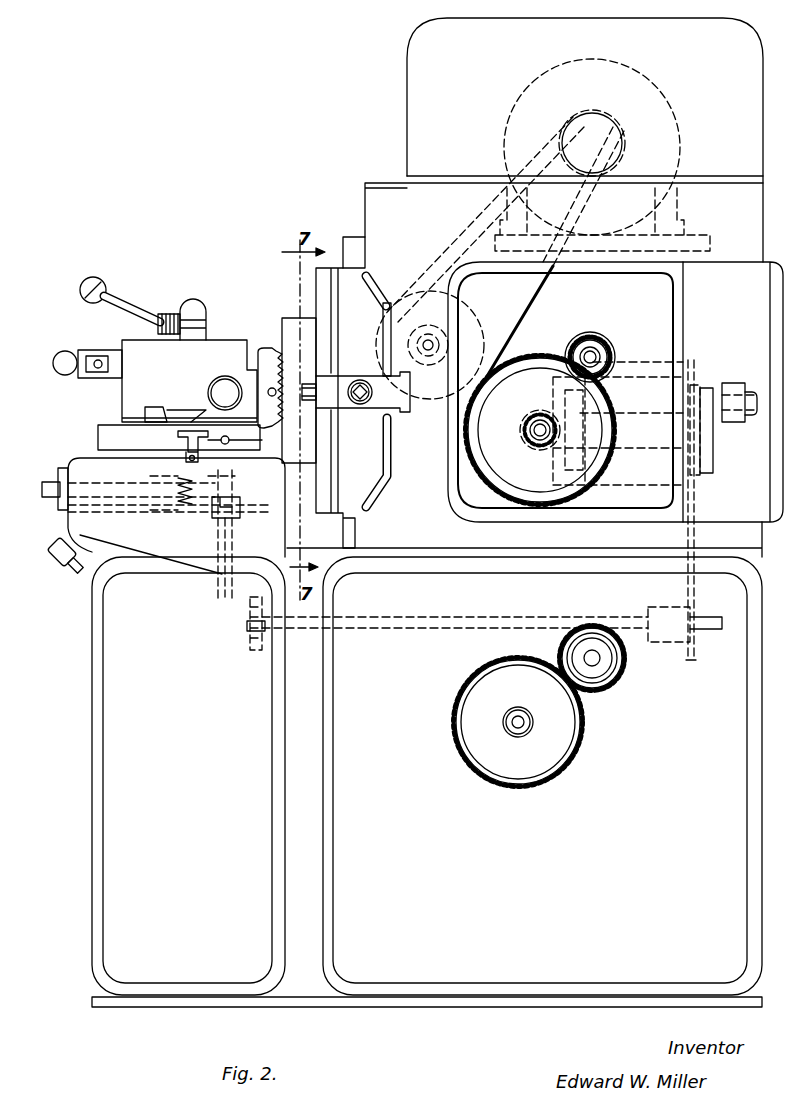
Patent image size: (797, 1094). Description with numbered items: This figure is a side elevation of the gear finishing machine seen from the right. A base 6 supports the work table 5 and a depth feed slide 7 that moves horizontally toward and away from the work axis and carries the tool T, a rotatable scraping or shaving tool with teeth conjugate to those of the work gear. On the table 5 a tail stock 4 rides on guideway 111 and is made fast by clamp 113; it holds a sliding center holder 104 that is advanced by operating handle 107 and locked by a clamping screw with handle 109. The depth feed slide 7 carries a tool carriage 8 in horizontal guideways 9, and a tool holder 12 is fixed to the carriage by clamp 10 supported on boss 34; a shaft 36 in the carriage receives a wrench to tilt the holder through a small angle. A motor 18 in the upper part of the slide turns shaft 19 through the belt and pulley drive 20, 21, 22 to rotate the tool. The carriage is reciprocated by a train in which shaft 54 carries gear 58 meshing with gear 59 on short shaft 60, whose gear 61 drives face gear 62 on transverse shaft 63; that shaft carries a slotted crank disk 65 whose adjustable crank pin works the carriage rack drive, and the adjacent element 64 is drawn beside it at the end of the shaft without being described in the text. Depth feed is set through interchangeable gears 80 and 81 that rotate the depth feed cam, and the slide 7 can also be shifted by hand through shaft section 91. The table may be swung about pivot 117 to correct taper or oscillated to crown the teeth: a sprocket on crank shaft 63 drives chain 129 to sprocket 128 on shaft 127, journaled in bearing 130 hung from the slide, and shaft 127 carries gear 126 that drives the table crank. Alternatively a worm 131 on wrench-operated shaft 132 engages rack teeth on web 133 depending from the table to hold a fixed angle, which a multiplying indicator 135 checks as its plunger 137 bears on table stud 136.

The tail stock 4 is at (221, 348).
The table 5 is at (98, 436).
The base 6 is at (92, 714).
The depth feed slide 7 is at (437, 540).
The tool carriage 8 is at (372, 298).
The horizontal guideways 9 is at (350, 238).
The clamp 10 is at (309, 402).
The tool holder 12 is at (292, 318).
The motor 18 is at (665, 118).
The shaft 19 is at (428, 362).
The pulley 20 is at (596, 122).
The belt 21 is at (509, 323).
The pulley 22 is at (470, 336).
The boss 34 is at (340, 380).
The shaft 36 is at (360, 405).
The shaft 54 is at (593, 343).
The gear 58 is at (608, 345).
The gear 59 is at (553, 355).
The short shaft 60 is at (528, 431).
The gear 61 is at (539, 418).
The face gear 62 is at (549, 455).
The transverse shaft 63 is at (645, 424).
The flange 64 is at (718, 450).
The crank disk 65 is at (736, 381).
The gear 80 is at (607, 681).
The gear 81 is at (575, 752).
The shaft section 91 is at (62, 571).
The center holder 104 is at (222, 378).
The operating handle 107 is at (65, 351).
The handle 109 is at (104, 288).
The guideway 111 is at (186, 408).
The clamp 113 is at (154, 406).
The pivot 117 is at (223, 575).
The gear 126 is at (250, 646).
The shaft 127 is at (408, 630).
The sprocket 128 is at (700, 650).
The chain 129 is at (705, 510).
The bearing 130 is at (668, 644).
The worm 131 is at (196, 500).
The shaft 132 is at (50, 498).
The web 133 is at (165, 505).
The multiplying indicator 135 is at (178, 440).
The stud 136 is at (252, 441).
The plunger 137 is at (228, 393).
The tool T is at (268, 365).